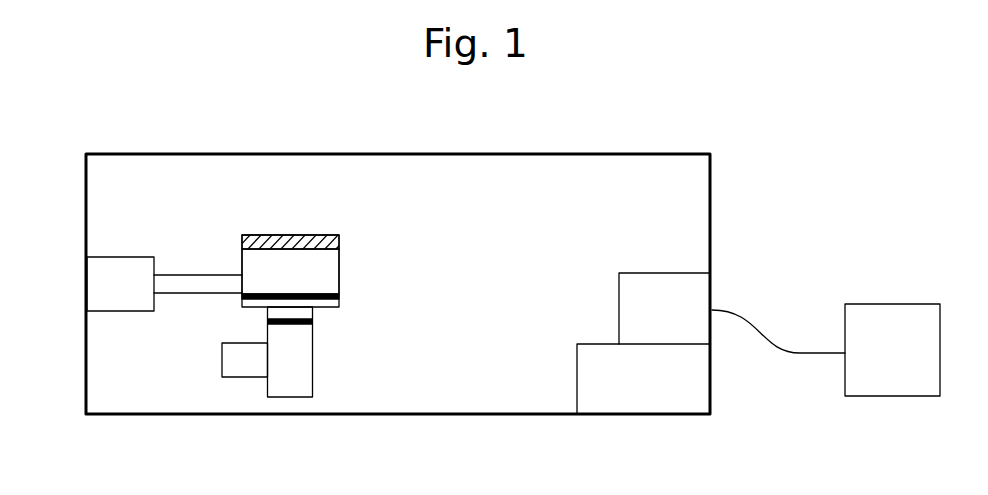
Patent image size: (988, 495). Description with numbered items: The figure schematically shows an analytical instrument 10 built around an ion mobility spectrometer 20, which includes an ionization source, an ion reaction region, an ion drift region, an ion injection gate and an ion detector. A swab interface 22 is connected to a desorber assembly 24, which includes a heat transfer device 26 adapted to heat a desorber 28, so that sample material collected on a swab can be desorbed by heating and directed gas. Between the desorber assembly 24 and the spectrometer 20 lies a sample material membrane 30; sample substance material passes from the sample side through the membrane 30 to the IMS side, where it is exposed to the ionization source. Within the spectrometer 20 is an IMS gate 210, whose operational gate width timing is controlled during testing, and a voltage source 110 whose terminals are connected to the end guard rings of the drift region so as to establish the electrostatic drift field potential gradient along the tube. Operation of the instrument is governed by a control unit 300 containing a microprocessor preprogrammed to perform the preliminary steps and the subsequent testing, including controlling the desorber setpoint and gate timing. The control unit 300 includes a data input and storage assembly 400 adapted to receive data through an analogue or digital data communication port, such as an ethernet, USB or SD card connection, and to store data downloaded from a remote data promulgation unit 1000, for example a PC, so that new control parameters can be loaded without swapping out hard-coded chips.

The analytical instrument 10 is at (166, 126).
The swab interface 22 is at (86, 292).
The heat transfer device 26 is at (242, 258).
The desorber assembly 24 is at (323, 261).
The desorber 28 is at (302, 237).
The sample material membrane 30 is at (318, 294).
The ion mobility spectrometer 20 is at (346, 371).
The IMS gate 210 is at (313, 321).
The voltage source 110 is at (221, 360).
The data input and storage assembly 400 is at (678, 282).
The control unit 300 is at (582, 383).
The remote data promulgation unit 1000 is at (805, 383).